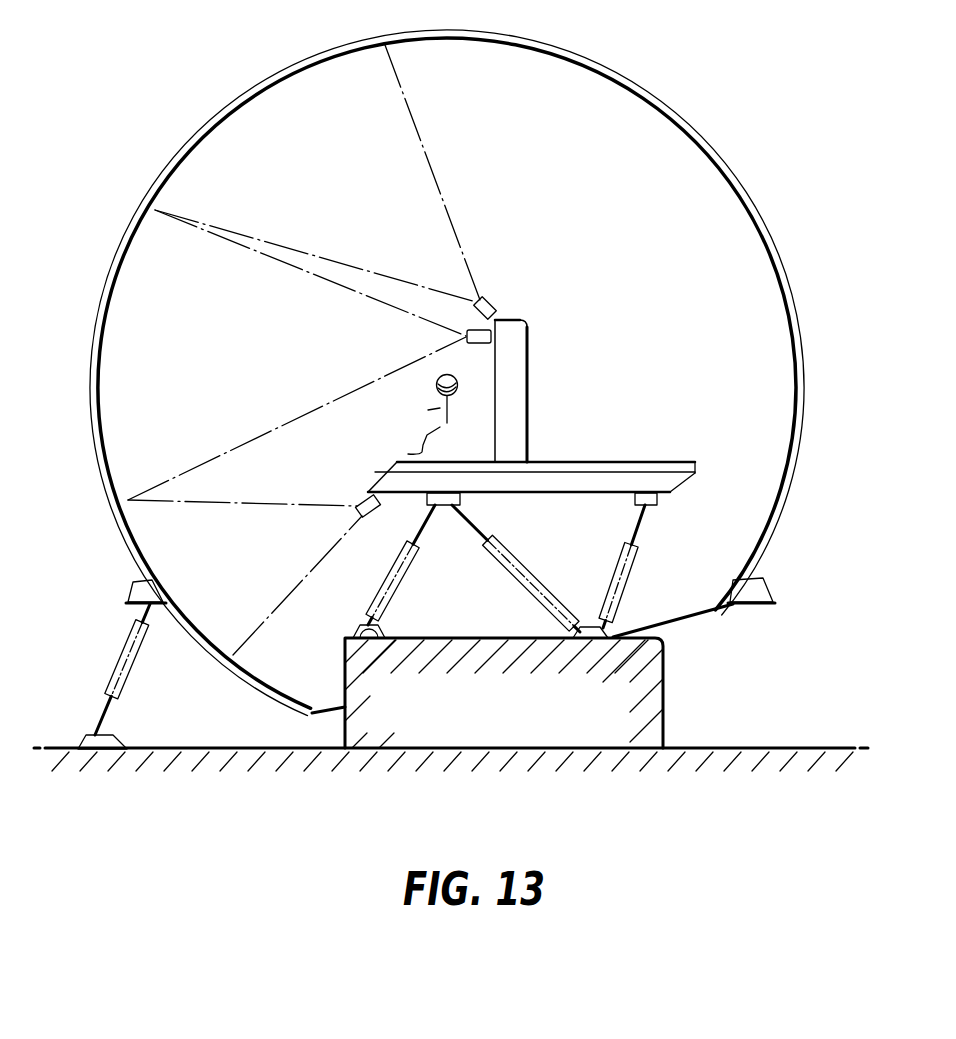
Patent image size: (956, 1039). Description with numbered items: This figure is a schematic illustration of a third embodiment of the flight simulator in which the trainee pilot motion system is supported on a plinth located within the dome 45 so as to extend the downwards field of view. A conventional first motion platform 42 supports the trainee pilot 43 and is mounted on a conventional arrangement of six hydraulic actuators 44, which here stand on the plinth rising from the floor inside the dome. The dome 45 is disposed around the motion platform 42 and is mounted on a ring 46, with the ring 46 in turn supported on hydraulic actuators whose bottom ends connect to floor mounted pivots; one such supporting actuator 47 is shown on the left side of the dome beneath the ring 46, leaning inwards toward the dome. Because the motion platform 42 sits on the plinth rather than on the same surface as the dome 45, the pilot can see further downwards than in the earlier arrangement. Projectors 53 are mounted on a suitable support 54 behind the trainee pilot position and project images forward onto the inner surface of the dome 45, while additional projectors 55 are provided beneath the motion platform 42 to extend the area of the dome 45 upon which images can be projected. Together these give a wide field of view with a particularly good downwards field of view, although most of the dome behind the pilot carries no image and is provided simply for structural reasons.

The first motion platform 42 is at (632, 462).
The trainee pilot 43 is at (442, 425).
The hydraulic actuators 44 is at (395, 590).
The dome 45 is at (108, 293).
The ring 46 is at (147, 600).
The support actuator 47 is at (115, 668).
The projectors 53 is at (495, 305).
The support 54 is at (512, 388).
The additional projectors 55 is at (373, 516).